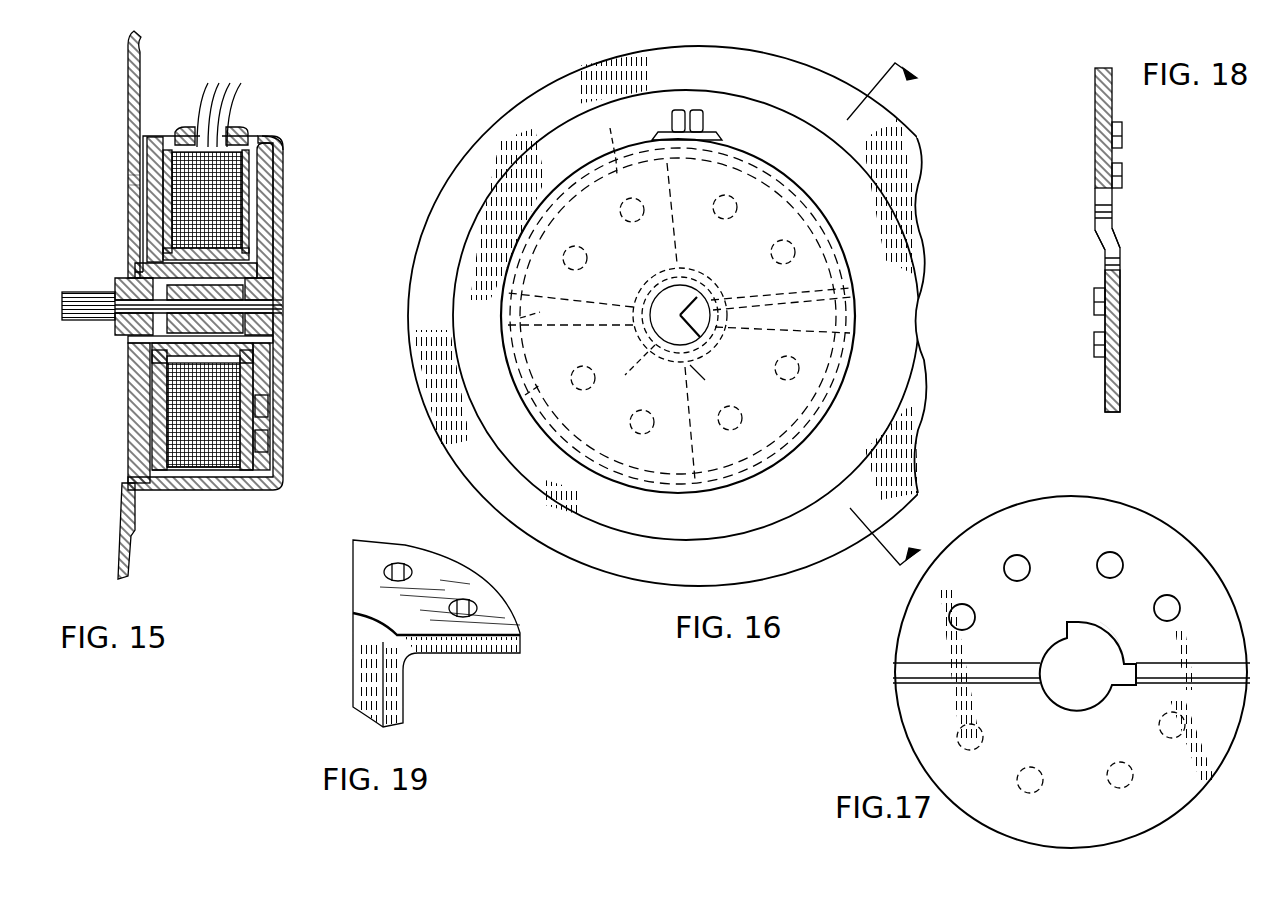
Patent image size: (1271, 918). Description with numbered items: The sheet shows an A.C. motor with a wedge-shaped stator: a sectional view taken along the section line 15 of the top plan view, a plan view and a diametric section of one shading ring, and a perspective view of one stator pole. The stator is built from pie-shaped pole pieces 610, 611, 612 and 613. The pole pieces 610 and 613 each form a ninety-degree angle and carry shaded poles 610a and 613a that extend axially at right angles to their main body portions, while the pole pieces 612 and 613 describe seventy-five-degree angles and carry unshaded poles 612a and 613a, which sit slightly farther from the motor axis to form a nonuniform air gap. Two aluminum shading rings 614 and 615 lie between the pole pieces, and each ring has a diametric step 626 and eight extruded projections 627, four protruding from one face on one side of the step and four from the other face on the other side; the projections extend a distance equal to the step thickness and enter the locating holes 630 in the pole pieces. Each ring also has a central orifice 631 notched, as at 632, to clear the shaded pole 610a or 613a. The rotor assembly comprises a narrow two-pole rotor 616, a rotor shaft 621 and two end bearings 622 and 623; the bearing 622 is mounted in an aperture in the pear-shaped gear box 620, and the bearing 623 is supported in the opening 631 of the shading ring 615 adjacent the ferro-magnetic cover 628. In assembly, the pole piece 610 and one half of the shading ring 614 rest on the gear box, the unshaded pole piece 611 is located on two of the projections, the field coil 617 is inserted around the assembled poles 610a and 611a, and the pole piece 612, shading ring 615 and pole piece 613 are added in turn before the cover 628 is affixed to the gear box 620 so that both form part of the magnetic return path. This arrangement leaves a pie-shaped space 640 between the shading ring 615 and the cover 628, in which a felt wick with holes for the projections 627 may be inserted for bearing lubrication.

In FIG. 15, the stator pole piece 610 is at (140, 152).
In FIG. 16, the stator pole piece 610 is at (900, 316).
In FIG. 19, the stator pole piece 610 is at (353, 582).
In FIG. 15, the shaded pole 610a is at (273, 246).
In FIG. 16, the shaded pole 610a is at (720, 290).
In FIG. 19, the shaded pole 610a is at (410, 715).
In FIG. 15, the stator pole piece 611 is at (147, 478).
In FIG. 16, the stator pole piece 611 is at (850, 367).
In FIG. 15, the stator pole 611a is at (250, 372).
In FIG. 16, the stator pole 611a is at (724, 378).
In FIG. 15, the stator pole piece 612 is at (243, 136).
In FIG. 16, the stator pole piece 612 is at (520, 318).
In FIG. 16, the unshaded pole 612a is at (665, 268).
In FIG. 15, the stator pole piece 613 is at (265, 483).
In FIG. 16, the stator pole piece 613 is at (525, 395).
In FIG. 16, the shaded pole 613a is at (640, 368).
In FIG. 15, the shading ring 614 is at (156, 138).
In FIG. 17, the shading ring 614 is at (1140, 512).
In FIG. 18, the shading ring 614 is at (1110, 413).
In FIG. 15, the shading ring 615 is at (283, 141).
In FIG. 15, the two-pole rotor 616 is at (270, 338).
In FIG. 16, the two-pole rotor 616 is at (700, 268).
In FIG. 19, the two-pole rotor 616 is at (476, 572).
In FIG. 15, the field coil 617 is at (197, 468).
In FIG. 16, the field coil 617 is at (666, 141).
In FIG. 15, the gear box 620 is at (133, 50).
In FIG. 16, the gear box 620 is at (526, 95).
In FIG. 15, the rotor shaft 621 is at (272, 306).
In FIG. 15, the end bearing 622 is at (117, 292).
In FIG. 15, the end bearing 623 is at (282, 291).
In FIG. 18, the diametric step 626 is at (1122, 236).
In FIG. 15, the extruded projections 627 is at (135, 180).
In FIG. 16, the extruded projections 627 is at (636, 433).
In FIG. 17, the extruded projections 627 is at (1178, 598).
In FIG. 18, the extruded projections 627 is at (1124, 175).
In FIG. 15, the ferro-magnetic cover 628 is at (245, 360).
In FIG. 19, the locating holes 630 is at (398, 563).
In FIG. 17, the central orifice 631 is at (1040, 700).
In FIG. 17, the notch 632 is at (1112, 640).
In FIG. 15, the pie-shaped space 640 is at (268, 450).
In FIG. 16, the section line 15 is at (897, 314).